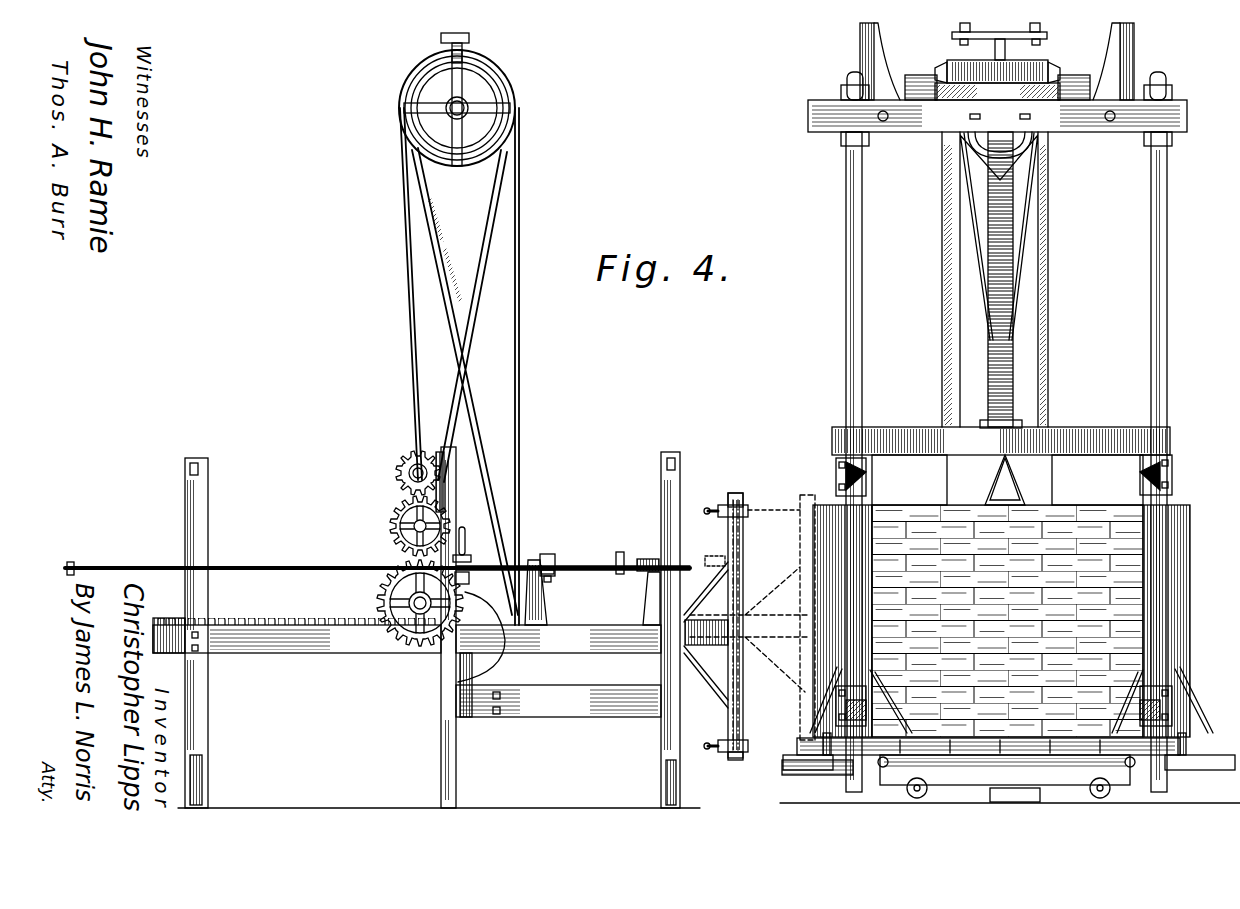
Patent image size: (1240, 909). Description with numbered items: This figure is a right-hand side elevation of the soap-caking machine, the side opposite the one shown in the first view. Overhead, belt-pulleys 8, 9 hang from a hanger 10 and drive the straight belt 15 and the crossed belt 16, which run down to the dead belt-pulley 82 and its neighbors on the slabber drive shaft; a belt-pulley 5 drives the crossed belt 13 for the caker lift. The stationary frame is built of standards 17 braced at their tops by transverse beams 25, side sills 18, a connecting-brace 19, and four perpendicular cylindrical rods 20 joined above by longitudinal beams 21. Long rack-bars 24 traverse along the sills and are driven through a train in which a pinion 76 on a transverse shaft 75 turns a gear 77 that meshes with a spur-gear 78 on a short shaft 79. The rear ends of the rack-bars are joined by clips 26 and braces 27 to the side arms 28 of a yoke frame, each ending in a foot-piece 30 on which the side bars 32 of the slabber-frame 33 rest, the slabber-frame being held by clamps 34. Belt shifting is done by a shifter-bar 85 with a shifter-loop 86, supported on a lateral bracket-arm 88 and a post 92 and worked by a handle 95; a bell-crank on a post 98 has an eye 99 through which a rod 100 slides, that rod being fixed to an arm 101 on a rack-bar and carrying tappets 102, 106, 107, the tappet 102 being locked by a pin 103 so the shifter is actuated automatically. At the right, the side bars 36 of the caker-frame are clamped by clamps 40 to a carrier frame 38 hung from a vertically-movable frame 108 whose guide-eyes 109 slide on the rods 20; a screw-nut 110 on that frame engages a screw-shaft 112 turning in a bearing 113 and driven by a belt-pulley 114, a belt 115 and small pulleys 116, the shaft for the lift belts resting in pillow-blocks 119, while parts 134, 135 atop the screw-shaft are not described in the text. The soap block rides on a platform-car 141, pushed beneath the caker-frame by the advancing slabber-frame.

The belt-pulley 5 is at (1030, 145).
The belt-pulley 8 is at (462, 160).
The belt-pulley 9 is at (497, 128).
The hanger 10 is at (457, 99).
The crossed belt 13 is at (1030, 262).
The straight belt 15 is at (529, 366).
The crossed belt 16 is at (470, 332).
The standards 17 is at (208, 535).
The side sills 18 is at (340, 640).
The connecting-brace 19 is at (558, 701).
The perpendicular cylindrical rods 20 is at (858, 368).
The longitudinal beams 21 is at (997, 116).
The rack-bars 24 is at (439, 643).
The transverse beams 25 is at (198, 470).
The clips 26 is at (749, 617).
The braces 27 is at (740, 562).
The side arms 28 is at (743, 710).
The foot-piece 30 is at (736, 760).
The side bars of slabber-frame 32 is at (743, 580).
The slabber-frame 33 is at (737, 493).
The clamps 34 is at (748, 511).
The side bars of caker-frame 36 is at (1067, 745).
The carrier frame 38 is at (1000, 738).
The clamps 40 is at (824, 770).
The transverse shaft 75 is at (396, 484).
The pinion 76 is at (397, 474).
The gear 77 is at (392, 525).
The spur-gear 78 is at (400, 650).
The short shaft 79 is at (395, 590).
The dead belt-pulley 82 is at (503, 668).
The shifter-bar 85 is at (469, 583).
The shifter-loop 86 is at (534, 560).
The lateral bracket-arm 88 is at (480, 685).
The post 92 is at (558, 639).
The handle 95 is at (462, 527).
The post or support 98 is at (540, 628).
The eye 99 is at (548, 554).
The rod 100 is at (573, 576).
The arm or post 101 is at (648, 585).
The tappet 102 is at (548, 582).
The pin 103 is at (546, 584).
The tappet 106 is at (616, 561).
The tappet 107 is at (74, 567).
The vertically-movable frame 108 is at (1188, 496).
The guide-eyes 109 is at (866, 470).
The screw-nut 110 is at (1022, 424).
The screw-shaft 112 is at (988, 378).
The bearing 113 is at (993, 100).
The belt-pulley 114 is at (1048, 62).
The belt 115 is at (1068, 74).
The small pulleys 116 is at (938, 70).
The pillow-blocks 119 is at (1005, 802).
The block 134 is at (1003, 45).
The handle bar 135 is at (999, 28).
The platform-car 141 is at (792, 775).